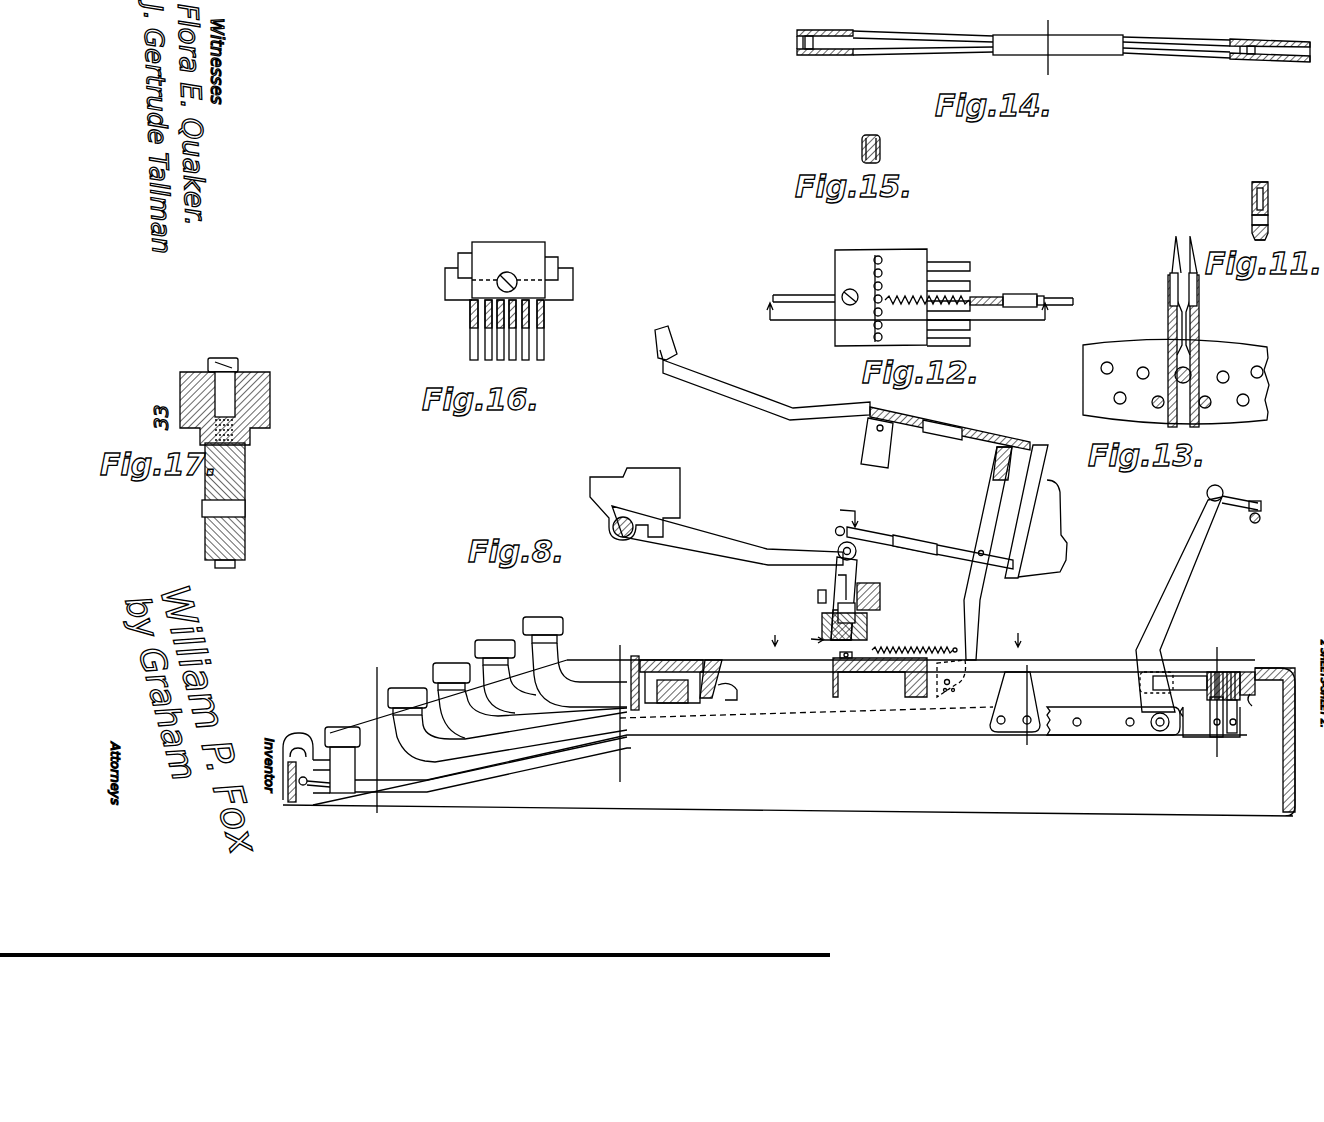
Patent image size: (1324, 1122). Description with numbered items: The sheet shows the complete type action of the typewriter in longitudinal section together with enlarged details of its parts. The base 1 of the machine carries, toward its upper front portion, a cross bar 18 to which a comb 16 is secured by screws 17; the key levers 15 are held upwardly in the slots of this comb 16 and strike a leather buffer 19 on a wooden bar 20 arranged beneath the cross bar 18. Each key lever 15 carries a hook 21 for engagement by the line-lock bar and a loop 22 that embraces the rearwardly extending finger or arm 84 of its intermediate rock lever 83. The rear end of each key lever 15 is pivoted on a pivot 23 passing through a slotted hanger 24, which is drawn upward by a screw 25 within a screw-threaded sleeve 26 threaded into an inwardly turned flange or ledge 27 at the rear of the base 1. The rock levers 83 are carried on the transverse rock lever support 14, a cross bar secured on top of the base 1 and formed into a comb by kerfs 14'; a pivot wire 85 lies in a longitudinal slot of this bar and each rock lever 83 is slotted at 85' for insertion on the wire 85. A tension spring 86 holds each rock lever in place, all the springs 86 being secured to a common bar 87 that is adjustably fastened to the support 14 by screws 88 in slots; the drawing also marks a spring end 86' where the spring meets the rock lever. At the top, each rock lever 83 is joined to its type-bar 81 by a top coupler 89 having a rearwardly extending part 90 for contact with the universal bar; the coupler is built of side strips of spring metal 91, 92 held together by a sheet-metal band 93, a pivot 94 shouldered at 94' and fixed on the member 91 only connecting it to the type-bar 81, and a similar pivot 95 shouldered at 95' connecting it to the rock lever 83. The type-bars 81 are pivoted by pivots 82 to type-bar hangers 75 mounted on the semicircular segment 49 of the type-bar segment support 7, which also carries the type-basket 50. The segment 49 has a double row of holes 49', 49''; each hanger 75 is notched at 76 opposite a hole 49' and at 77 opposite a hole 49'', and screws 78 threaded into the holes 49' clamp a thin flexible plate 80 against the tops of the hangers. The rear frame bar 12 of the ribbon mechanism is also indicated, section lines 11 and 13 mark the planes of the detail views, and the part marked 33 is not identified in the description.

In FIG. 8, the base 1 is at (1283, 752).
In FIG. 8, the type-bar segment support 7 is at (880, 594).
In FIG. 8, the section line 11 is at (1021, 668).
In FIG. 8, the rear frame bar of the ribbon mechanism 12 is at (900, 629).
In FIG. 8, the section line 13 is at (824, 569).
In FIG. 12, the rock lever support 14 is at (886, 283).
In FIG. 8, the rock lever support 14 is at (937, 627).
In FIG. 12, the kerfs 14' is at (958, 283).
In FIG. 14, the key levers 15 is at (1043, 23).
In FIG. 12, the key levers 15 is at (778, 295).
In FIG. 11, the key levers 15 is at (1253, 235).
In FIG. 16, the key levers 15 is at (545, 314).
In FIG. 17, the key levers 15 is at (215, 540).
In FIG. 8, the key levers 15 is at (740, 737).
In FIG. 16, the comb 16 is at (535, 250).
In FIG. 8, the comb 16 is at (614, 648).
In FIG. 16, the screws 17 is at (509, 270).
In FIG. 8, the screws 17 is at (1211, 650).
In FIG. 16, the cross bar 18 is at (555, 258).
In FIG. 8, the cross bar 18 is at (390, 667).
In FIG. 16, the leather buffer 19 is at (570, 297).
In FIG. 8, the leather buffer 19 is at (396, 776).
In FIG. 16, the wooden bar 20 is at (565, 282).
In FIG. 8, the wooden bar 20 is at (660, 700).
In FIG. 8, the hooks 21 is at (737, 688).
In FIG. 12, the loop 22 is at (1020, 294).
In FIG. 11, the loop 22 is at (1270, 215).
In FIG. 8, the loop 22 is at (1020, 697).
In FIG. 17, the pivot 23 is at (203, 508).
In FIG. 17, the slotted hanger 24 is at (205, 485).
In FIG. 8, the slotted hanger 24 is at (1210, 718).
In FIG. 17, the screw 25 is at (231, 358).
In FIG. 17, the screw-threaded sleeve 26 is at (205, 372).
In FIG. 8, the screw-threaded sleeve 26 is at (1225, 673).
In FIG. 8, the flange or ledge 27 is at (1265, 706).
In FIG. 8, the ramp 33 is at (537, 773).
In FIG. 13, the semicircular segment 49 is at (1198, 398).
In FIG. 8, the semicircular segment 49 is at (875, 605).
In FIG. 13, the holes 49' is at (1263, 367).
In FIG. 13, the holes 49'' is at (1277, 406).
In FIG. 8, the type-basket 50 is at (668, 493).
In FIG. 12, the type-bar hangers 75 is at (908, 330).
In FIG. 13, the type-bar hangers 75 is at (1200, 345).
In FIG. 8, the type-bar hangers 75 is at (836, 570).
In FIG. 13, the notch 76 is at (1150, 382).
In FIG. 13, the notch 77 is at (1245, 420).
In FIG. 8, the notch 77 is at (864, 626).
In FIG. 13, the screws 78 is at (1198, 378).
In FIG. 8, the screws 78 is at (820, 597).
In FIG. 8, the plate 80 is at (833, 583).
In FIG. 13, the type-bars 81 is at (1182, 240).
In FIG. 8, the type-bars 81 is at (760, 404).
In FIG. 13, the pivot 82 is at (1172, 290).
In FIG. 8, the pivot 82 is at (876, 430).
In FIG. 12, the intermediate rock lever 83 is at (982, 297).
In FIG. 8, the intermediate rock lever 83 is at (998, 478).
In FIG. 12, the finger or arm 84 is at (1042, 296).
In FIG. 11, the finger or arm 84 is at (1268, 190).
In FIG. 8, the finger or arm 84 is at (1037, 692).
In FIG. 8, the pivot wire 85 is at (938, 730).
In FIG. 8, the slot 85' is at (915, 730).
In FIG. 12, the tension spring 86 is at (883, 281).
In FIG. 8, the tension spring 86 is at (974, 653).
In FIG. 12, the chain end 86' is at (907, 262).
In FIG. 8, the chain end 86' is at (945, 643).
In FIG. 8, the common bar 87 is at (880, 652).
In FIG. 12, the screws 88 is at (843, 292).
In FIG. 8, the screws 88 is at (838, 660).
In FIG. 14, the top coupler 89 is at (1140, 40).
In FIG. 8, the top coupler 89 is at (975, 424).
In FIG. 14, the rearwardly-extending part 90 is at (1306, 62).
In FIG. 8, the rearwardly-extending part 90 is at (1036, 446).
In FIG. 14, the side strip 91 is at (896, 53).
In FIG. 15, the side strip 91 is at (881, 149).
In FIG. 14, the side strip 92 is at (886, 33).
In FIG. 15, the side strip 92 is at (862, 141).
In FIG. 14, the band 93 is at (1096, 55).
In FIG. 15, the band 93 is at (878, 140).
In FIG. 14, the pivot 94 is at (825, 58).
In FIG. 8, the pivot 94 is at (869, 521).
In FIG. 14, the shoulder 94' is at (825, 27).
In FIG. 14, the pivot 95 is at (1264, 66).
In FIG. 8, the pivot 95 is at (1002, 534).
In FIG. 14, the shoulder 95' is at (1266, 29).